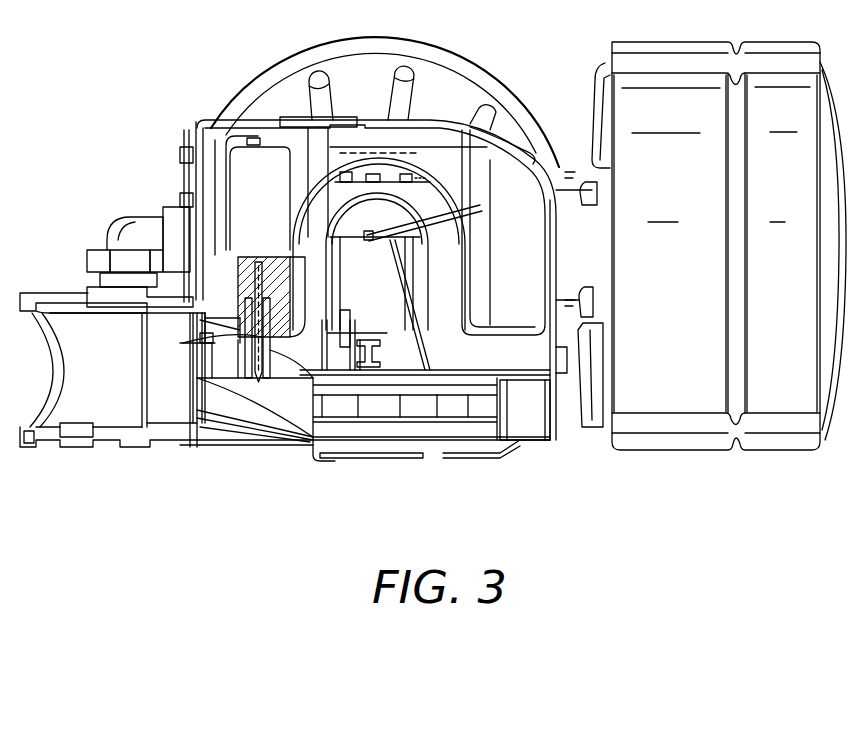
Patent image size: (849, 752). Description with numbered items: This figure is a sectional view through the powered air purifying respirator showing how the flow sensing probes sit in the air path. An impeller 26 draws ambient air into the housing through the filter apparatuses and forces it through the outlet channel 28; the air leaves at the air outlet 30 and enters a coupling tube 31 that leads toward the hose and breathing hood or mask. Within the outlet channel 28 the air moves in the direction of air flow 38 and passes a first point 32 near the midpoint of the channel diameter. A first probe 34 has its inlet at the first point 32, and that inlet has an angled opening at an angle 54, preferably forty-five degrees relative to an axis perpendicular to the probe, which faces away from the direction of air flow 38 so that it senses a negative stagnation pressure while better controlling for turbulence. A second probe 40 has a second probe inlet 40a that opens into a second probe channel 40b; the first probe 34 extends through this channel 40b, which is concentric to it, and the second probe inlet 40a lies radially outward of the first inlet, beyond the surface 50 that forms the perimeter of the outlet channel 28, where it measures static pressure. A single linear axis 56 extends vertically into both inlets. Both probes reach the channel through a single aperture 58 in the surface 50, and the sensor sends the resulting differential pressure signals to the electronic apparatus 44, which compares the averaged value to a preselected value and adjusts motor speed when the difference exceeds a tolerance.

The impeller 26 is at (457, 410).
The outlet channel 28 is at (262, 385).
The air outlet 30 is at (185, 362).
The coupling tube 31 is at (70, 437).
The first point 32 is at (282, 400).
The first probe 34 is at (193, 400).
The direction of air flow 38 is at (230, 358).
The second probe 40 is at (285, 262).
The second probe inlet 40a is at (343, 318).
The second probe channel 40b is at (190, 320).
The electronic apparatus 44 is at (425, 196).
The surface 50 is at (316, 443).
The angle 54 is at (240, 380).
The single linear axis 56 is at (258, 260).
The single aperture 58 is at (214, 380).